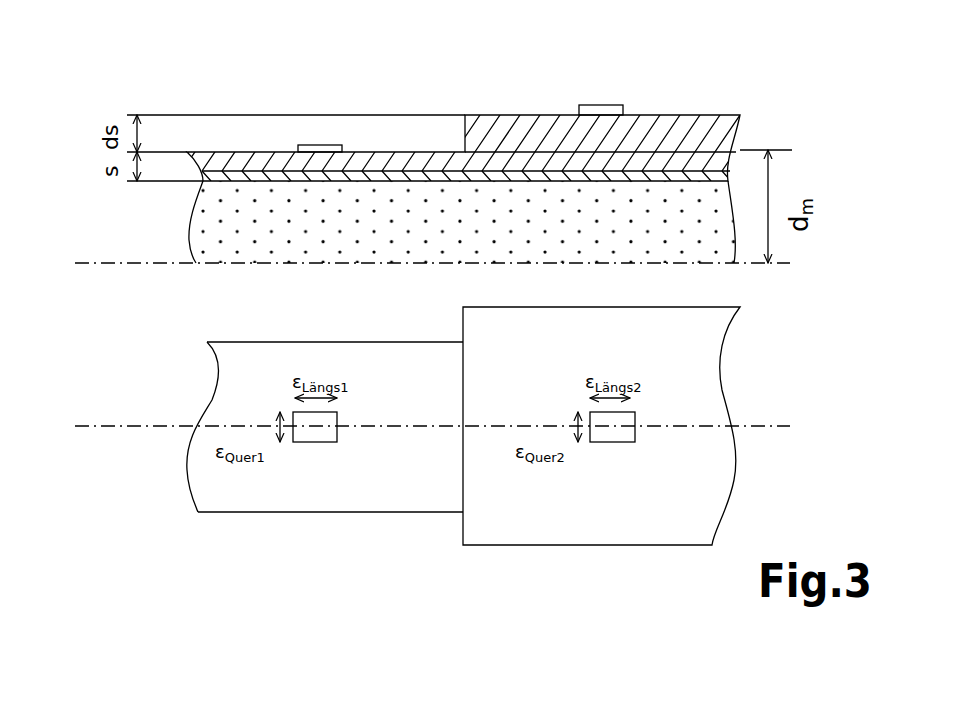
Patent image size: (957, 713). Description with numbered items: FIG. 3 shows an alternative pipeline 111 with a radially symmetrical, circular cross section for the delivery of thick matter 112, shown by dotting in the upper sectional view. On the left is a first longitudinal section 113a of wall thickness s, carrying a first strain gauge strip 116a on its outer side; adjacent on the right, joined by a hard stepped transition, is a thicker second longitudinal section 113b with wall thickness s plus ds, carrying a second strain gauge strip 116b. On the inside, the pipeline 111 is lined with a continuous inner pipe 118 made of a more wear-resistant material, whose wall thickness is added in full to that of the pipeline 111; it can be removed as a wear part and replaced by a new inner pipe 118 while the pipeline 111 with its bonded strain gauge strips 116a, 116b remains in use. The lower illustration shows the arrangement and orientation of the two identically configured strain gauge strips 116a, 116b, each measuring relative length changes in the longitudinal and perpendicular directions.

The pipeline 111 is at (128, 80).
The thick matter 112 is at (380, 238).
The first longitudinal section 113a is at (272, 100).
The second longitudinal section 113b is at (659, 80).
The first strain gauge strip 116a is at (323, 145).
The second strain gauge strip 116b is at (579, 112).
The inner pipe 118 is at (737, 176).